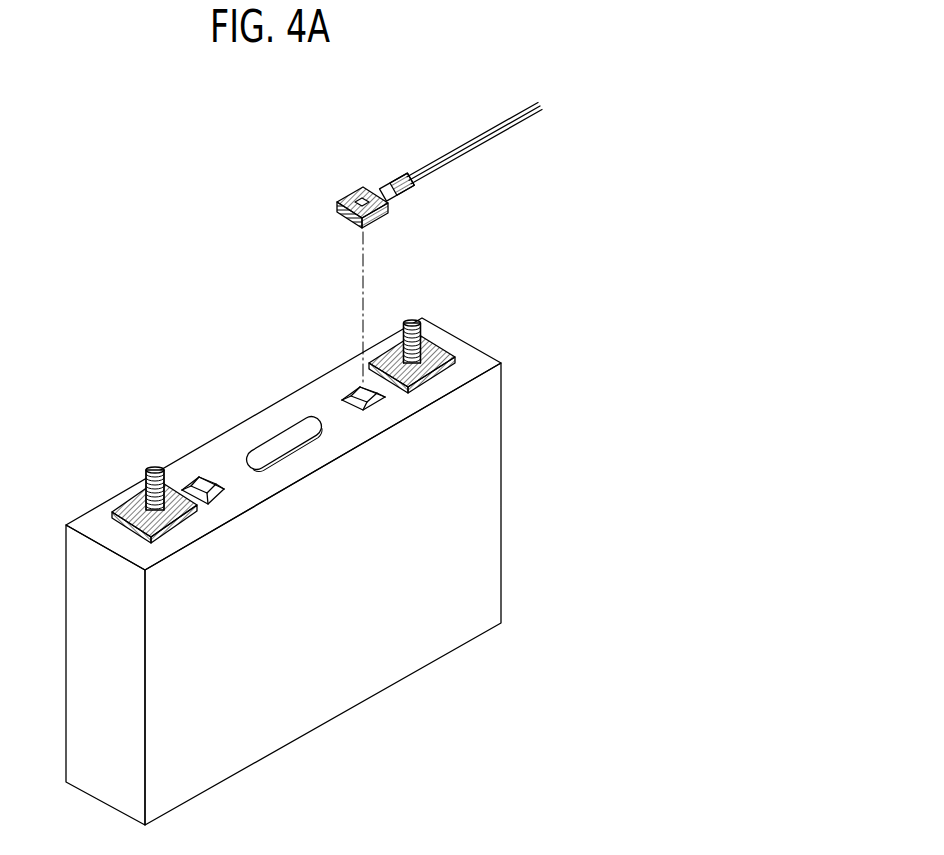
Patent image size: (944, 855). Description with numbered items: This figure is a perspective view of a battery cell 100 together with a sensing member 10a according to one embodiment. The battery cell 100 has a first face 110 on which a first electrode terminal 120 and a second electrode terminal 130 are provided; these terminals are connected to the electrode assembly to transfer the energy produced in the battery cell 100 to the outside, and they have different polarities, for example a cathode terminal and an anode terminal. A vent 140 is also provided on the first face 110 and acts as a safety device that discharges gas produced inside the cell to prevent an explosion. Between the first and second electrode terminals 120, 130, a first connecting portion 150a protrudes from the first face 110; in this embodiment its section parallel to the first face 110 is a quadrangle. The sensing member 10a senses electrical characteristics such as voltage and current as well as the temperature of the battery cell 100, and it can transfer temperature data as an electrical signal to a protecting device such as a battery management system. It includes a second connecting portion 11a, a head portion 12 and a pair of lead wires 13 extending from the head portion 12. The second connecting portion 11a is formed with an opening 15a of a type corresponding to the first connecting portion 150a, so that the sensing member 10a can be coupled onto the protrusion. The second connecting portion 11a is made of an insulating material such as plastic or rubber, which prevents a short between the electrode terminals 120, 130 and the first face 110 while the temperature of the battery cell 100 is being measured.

The battery cell 100 is at (530, 297).
The first face 110 is at (305, 402).
The first electrode terminal 120 is at (413, 322).
The second electrode terminal 130 is at (156, 470).
The vent 140 is at (277, 443).
The first connecting portion 150a is at (202, 474).
The sensing member 10a is at (382, 232).
The second connecting portion 11a is at (333, 229).
The head portion 12 is at (386, 190).
The lead wires 13 is at (500, 130).
The opening 15a is at (357, 199).